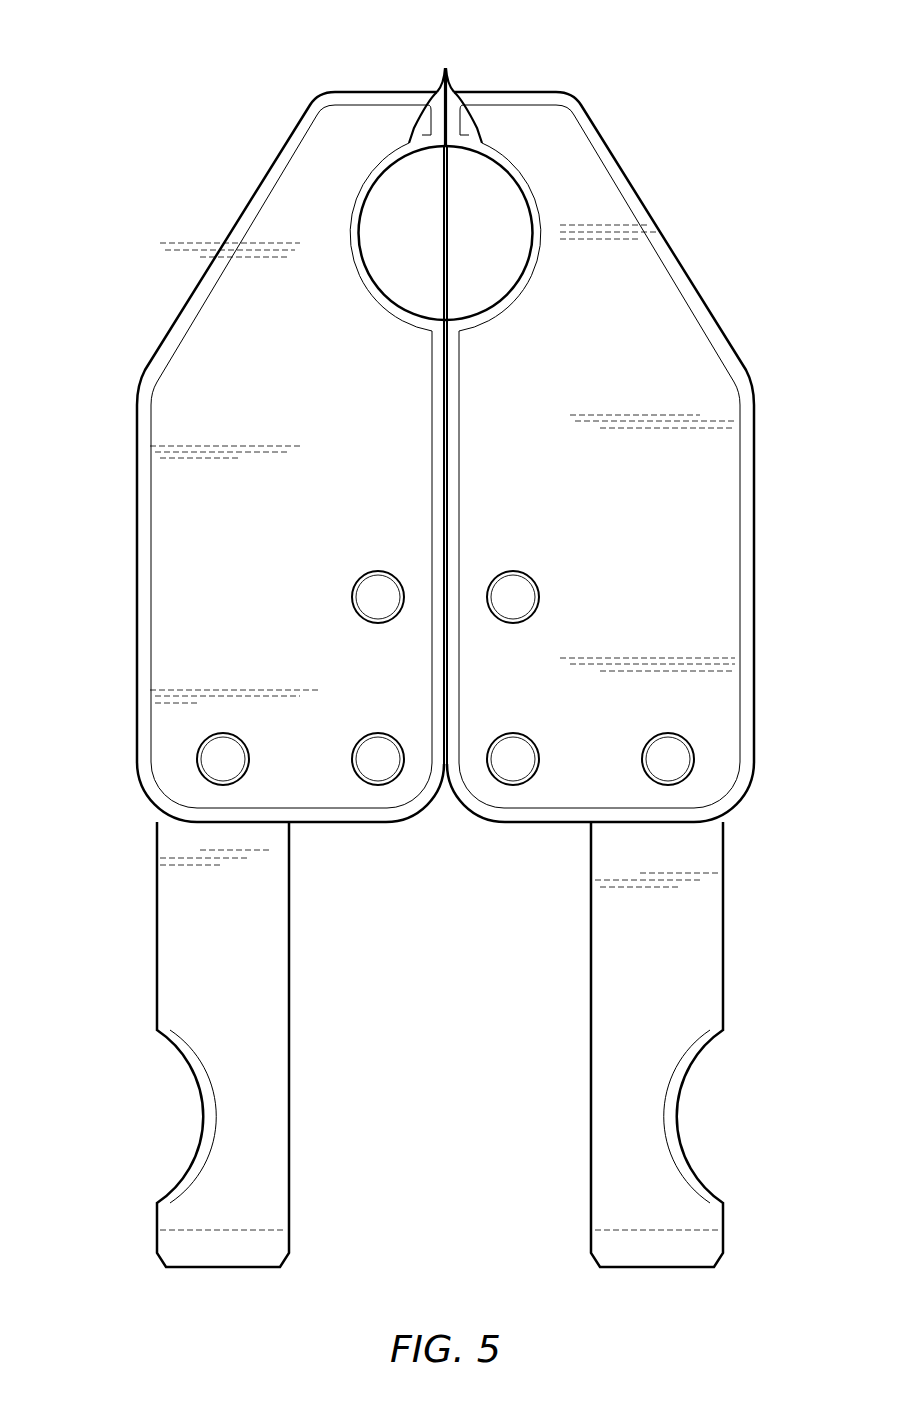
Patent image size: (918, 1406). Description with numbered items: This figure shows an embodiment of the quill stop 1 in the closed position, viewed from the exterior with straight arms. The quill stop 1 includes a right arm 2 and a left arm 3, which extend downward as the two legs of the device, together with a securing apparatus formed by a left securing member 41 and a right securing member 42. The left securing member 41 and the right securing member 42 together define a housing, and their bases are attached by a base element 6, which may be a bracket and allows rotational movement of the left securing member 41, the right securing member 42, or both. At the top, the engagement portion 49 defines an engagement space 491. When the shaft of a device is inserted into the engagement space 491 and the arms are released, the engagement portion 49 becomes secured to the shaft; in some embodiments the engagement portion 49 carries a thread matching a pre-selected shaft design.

The quill stop 1 is at (110, 40).
The right arm 2 is at (688, 968).
The left arm 3 is at (178, 968).
The base element 6 is at (445, 803).
The left securing member 41 is at (225, 323).
The right securing member 42 is at (680, 342).
The engagement portion 49 is at (446, 76).
The engagement space 491 is at (479, 232).